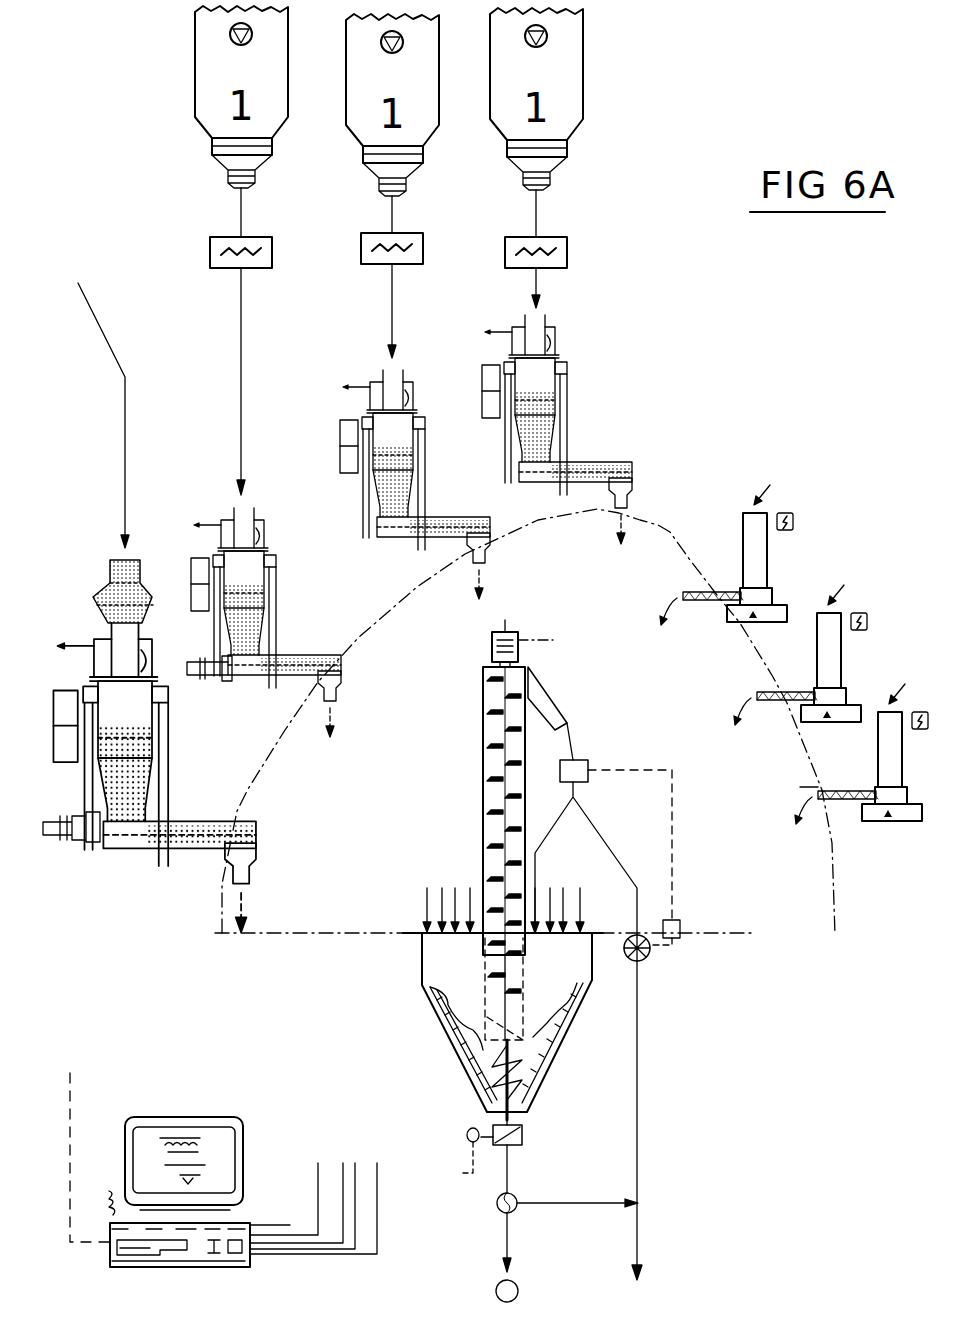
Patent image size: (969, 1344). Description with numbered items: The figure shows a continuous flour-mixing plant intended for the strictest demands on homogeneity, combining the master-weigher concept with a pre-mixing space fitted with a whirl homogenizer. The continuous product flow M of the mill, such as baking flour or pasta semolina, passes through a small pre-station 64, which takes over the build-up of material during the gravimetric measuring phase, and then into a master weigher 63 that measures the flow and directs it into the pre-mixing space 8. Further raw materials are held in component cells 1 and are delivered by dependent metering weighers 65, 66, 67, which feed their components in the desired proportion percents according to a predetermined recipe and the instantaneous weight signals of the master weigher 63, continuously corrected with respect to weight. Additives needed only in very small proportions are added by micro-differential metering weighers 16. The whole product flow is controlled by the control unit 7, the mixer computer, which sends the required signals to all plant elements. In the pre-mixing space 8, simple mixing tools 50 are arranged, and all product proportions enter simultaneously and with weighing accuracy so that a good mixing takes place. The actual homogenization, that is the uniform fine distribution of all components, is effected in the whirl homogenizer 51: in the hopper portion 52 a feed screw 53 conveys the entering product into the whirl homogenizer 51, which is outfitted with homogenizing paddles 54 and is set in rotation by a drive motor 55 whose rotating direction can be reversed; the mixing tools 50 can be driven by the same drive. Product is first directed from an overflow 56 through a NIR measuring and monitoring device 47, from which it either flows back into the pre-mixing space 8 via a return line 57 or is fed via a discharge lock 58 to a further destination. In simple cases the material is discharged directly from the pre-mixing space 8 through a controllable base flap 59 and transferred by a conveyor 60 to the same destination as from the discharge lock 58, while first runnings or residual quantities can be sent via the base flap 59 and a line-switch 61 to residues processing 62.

The component cell 1 is at (389, 250).
The continuous product flow M is at (75, 272).
The control unit 7 is at (218, 1117).
The pre-mixing space 8 is at (838, 910).
The micro-differential metering weigher 16 is at (820, 533).
The NIR measuring and monitoring device 47 is at (580, 760).
The mixing tools 50 is at (570, 1030).
The whirl homogenizer 51 is at (483, 717).
The hopper portion 52 is at (482, 1077).
The feed screw 53 is at (520, 1073).
The homogenizing paddles 54 is at (527, 952).
The drive motor 55 is at (518, 637).
The overflow 56 is at (538, 690).
The return line 57 is at (548, 831).
The discharge lock 58 is at (647, 955).
The base flap 59 is at (522, 1137).
The conveyor 60 is at (593, 1205).
The line-switch 61 is at (517, 1207).
The residues processing 62 is at (495, 1292).
The master weigher 63 is at (173, 737).
The pre-station 64 is at (92, 592).
The dependent metering weigher 65 is at (283, 635).
The dependent metering weigher 66 is at (432, 480).
The dependent metering weigher 67 is at (575, 427).